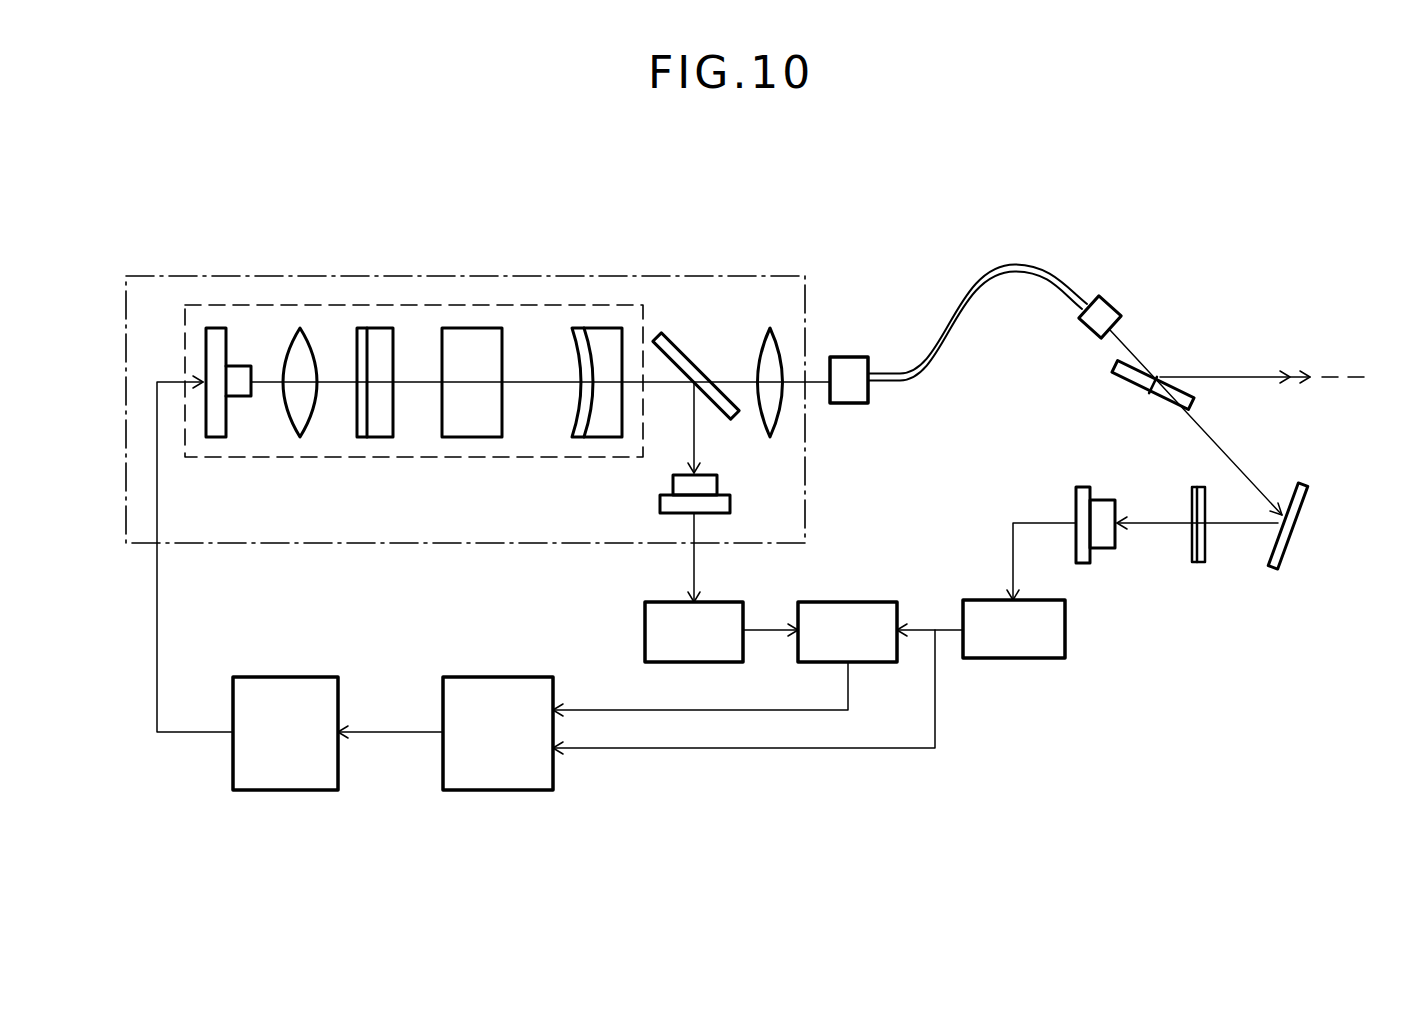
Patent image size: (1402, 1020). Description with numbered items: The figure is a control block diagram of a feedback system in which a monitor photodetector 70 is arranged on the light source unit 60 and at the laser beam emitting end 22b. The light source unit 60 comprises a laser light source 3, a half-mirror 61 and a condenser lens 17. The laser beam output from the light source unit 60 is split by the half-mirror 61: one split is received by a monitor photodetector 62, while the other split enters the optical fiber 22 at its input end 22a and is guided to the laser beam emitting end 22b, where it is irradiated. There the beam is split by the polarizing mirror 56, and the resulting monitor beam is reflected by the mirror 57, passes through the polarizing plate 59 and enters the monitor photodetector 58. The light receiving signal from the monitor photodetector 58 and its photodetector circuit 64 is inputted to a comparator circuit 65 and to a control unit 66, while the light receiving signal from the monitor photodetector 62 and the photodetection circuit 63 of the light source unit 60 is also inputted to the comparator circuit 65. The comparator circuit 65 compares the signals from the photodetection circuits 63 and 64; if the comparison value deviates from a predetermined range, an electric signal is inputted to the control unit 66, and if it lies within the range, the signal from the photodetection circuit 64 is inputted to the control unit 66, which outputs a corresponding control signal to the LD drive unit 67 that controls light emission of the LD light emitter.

The laser light source 3 is at (365, 308).
The condenser lens 17 is at (778, 433).
The optical fiber 22 is at (1017, 266).
The optical fiber input end 22a is at (860, 357).
The laser beam emitting end 22b is at (1102, 315).
The polarizing mirror 56 is at (1122, 372).
The mirror 57 is at (1308, 505).
The monitor photodetector 58 is at (1105, 548).
The polarizing plate 59 is at (1197, 563).
The light source unit 60 is at (690, 276).
The half-mirror 61 is at (664, 336).
The monitor photodetector 62 is at (680, 488).
The photodetection circuit 63 is at (702, 662).
The photodetector circuit 64 is at (1038, 658).
The comparator circuit 65 is at (863, 602).
The control unit 66 is at (515, 790).
The LD drive unit 67 is at (295, 790).
The monitor photodetector 70 is at (1250, 653).